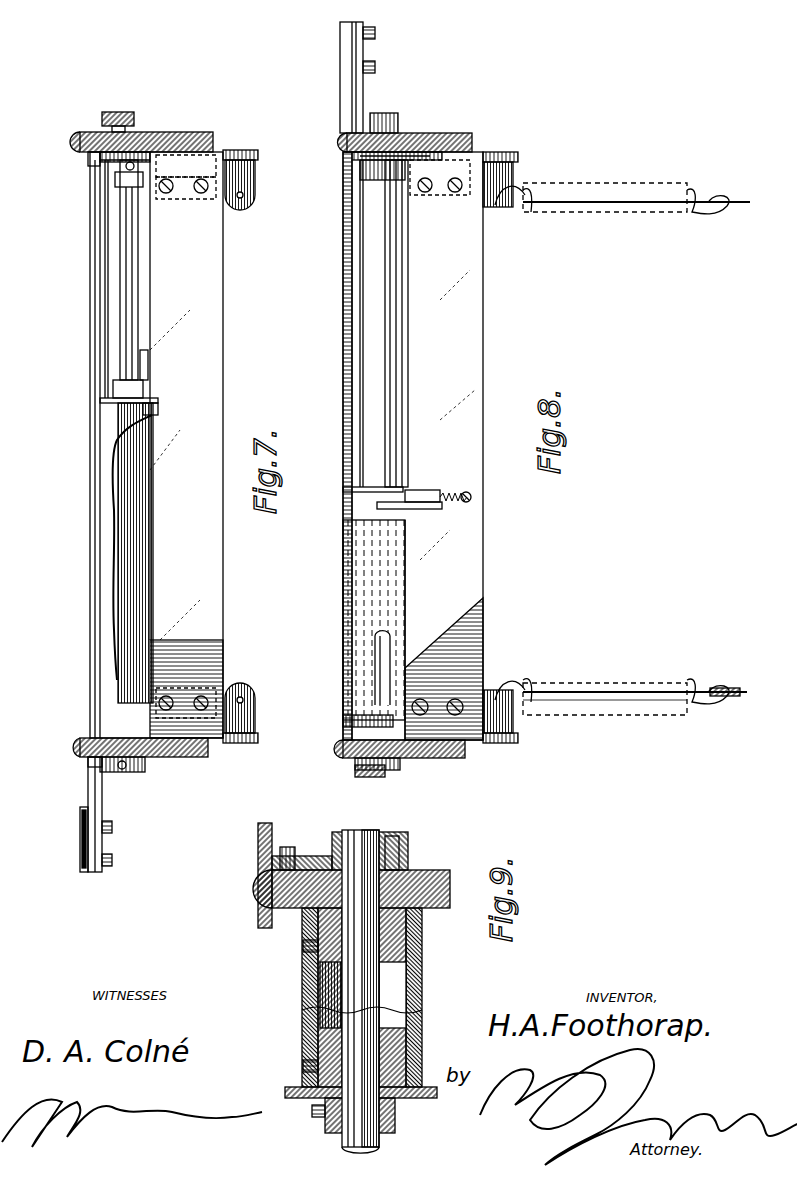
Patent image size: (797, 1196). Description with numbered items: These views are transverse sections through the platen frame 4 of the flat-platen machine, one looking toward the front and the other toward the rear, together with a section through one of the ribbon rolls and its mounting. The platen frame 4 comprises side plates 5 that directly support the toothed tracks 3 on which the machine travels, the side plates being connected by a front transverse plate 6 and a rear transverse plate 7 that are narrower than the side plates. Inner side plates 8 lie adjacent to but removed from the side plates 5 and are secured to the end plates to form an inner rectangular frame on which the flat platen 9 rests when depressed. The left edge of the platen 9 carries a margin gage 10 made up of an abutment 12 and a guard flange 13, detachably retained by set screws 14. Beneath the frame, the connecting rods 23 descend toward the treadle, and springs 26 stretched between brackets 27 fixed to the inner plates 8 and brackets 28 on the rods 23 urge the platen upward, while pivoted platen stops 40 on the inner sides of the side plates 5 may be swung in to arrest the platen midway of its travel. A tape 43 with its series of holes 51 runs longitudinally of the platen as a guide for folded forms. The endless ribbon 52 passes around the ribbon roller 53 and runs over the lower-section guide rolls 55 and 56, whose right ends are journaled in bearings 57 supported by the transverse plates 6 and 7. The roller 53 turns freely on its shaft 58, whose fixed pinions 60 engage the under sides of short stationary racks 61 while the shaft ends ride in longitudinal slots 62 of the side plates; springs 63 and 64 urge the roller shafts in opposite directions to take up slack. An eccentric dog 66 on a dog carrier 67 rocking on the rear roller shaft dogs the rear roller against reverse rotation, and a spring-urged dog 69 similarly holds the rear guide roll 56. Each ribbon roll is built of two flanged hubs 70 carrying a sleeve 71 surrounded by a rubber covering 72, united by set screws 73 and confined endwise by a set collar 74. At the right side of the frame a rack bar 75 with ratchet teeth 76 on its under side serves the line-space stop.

In FIG. 7, the tracks or guides 3 is at (76, 140).
In FIG. 8, the tracks or guides 3 is at (340, 142).
In FIG. 9, the tracks or guides 3 is at (262, 872).
In FIG. 8, the platen frame 4 is at (428, 702).
In FIG. 7, the side plates 5 is at (205, 132).
In FIG. 8, the side plates 5 is at (470, 133).
In FIG. 9, the side plates 5 is at (440, 870).
In FIG. 7, the front transverse plate 6 is at (223, 578).
In FIG. 8, the rear transverse plate 7 is at (483, 428).
In FIG. 7, the inner side plates 8 is at (195, 198).
In FIG. 8, the inner side plates 8 is at (440, 195).
In FIG. 7, the platen 9 is at (101, 330).
In FIG. 8, the platen 9 is at (355, 332).
In FIG. 7, the margin guide or gage 10 is at (80, 850).
In FIG. 7, the abutment 12 is at (92, 872).
In FIG. 8, the abutment 12 is at (342, 52).
In FIG. 7, the guard flange 13 is at (82, 822).
In FIG. 7, the set screws 14 is at (112, 862).
In FIG. 8, the set screws 14 is at (376, 33).
In FIG. 8, the connecting rods 23 is at (578, 200).
In FIG. 8, the springs 26 is at (608, 715).
In FIG. 7, the brackets 27 is at (245, 188).
In FIG. 8, the brackets 27 is at (496, 690).
In FIG. 8, the brackets 28 is at (725, 700).
In FIG. 7, the platen stops 40 is at (250, 152).
In FIG. 8, the platen stops 40 is at (510, 152).
In FIG. 7, the tape 43 is at (100, 400).
In FIG. 8, the tape 43 is at (343, 490).
In FIG. 7, the holes 51 is at (146, 386).
In FIG. 7, the endless ribbon 52 is at (92, 662).
In FIG. 8, the endless ribbon 52 is at (346, 390).
In FIG. 7, the ribbon roller 53 is at (158, 406).
In FIG. 7, the lower section guide roll 55 is at (153, 560).
In FIG. 8, the rear guide roll 56 is at (400, 385).
In FIG. 8, the bearings 57 is at (405, 509).
In FIG. 7, the shaft 58 is at (138, 250).
In FIG. 7, the pinions 60 is at (145, 152).
In FIG. 8, the pinions 60 is at (384, 113).
In FIG. 9, the pinions 60 is at (400, 848).
In FIG. 7, the stationary racks 61 is at (92, 160).
In FIG. 8, the stationary racks 61 is at (355, 128).
In FIG. 9, the stationary racks 61 is at (300, 847).
In FIG. 9, the longitudinal slots 62 is at (440, 880).
In FIG. 7, the spring 63 is at (115, 180).
In FIG. 8, the spring 64 is at (343, 690).
In FIG. 8, the eccentric dog 66 is at (360, 180).
In FIG. 8, the dog carrier 67 is at (400, 156).
In FIG. 8, the spring urged dog 69 is at (445, 509).
In FIG. 9, the flanged hubs 70 is at (422, 930).
In FIG. 9, the sleeve 71 is at (406, 970).
In FIG. 9, the covering 72 is at (422, 1000).
In FIG. 9, the set screws 73 is at (303, 946).
In FIG. 9, the set collar 74 is at (395, 1115).
In FIG. 7, the rack bar 75 is at (110, 112).
In FIG. 8, the rack bar 75 is at (370, 777).
In FIG. 7, the ratchet teeth 76 is at (132, 112).